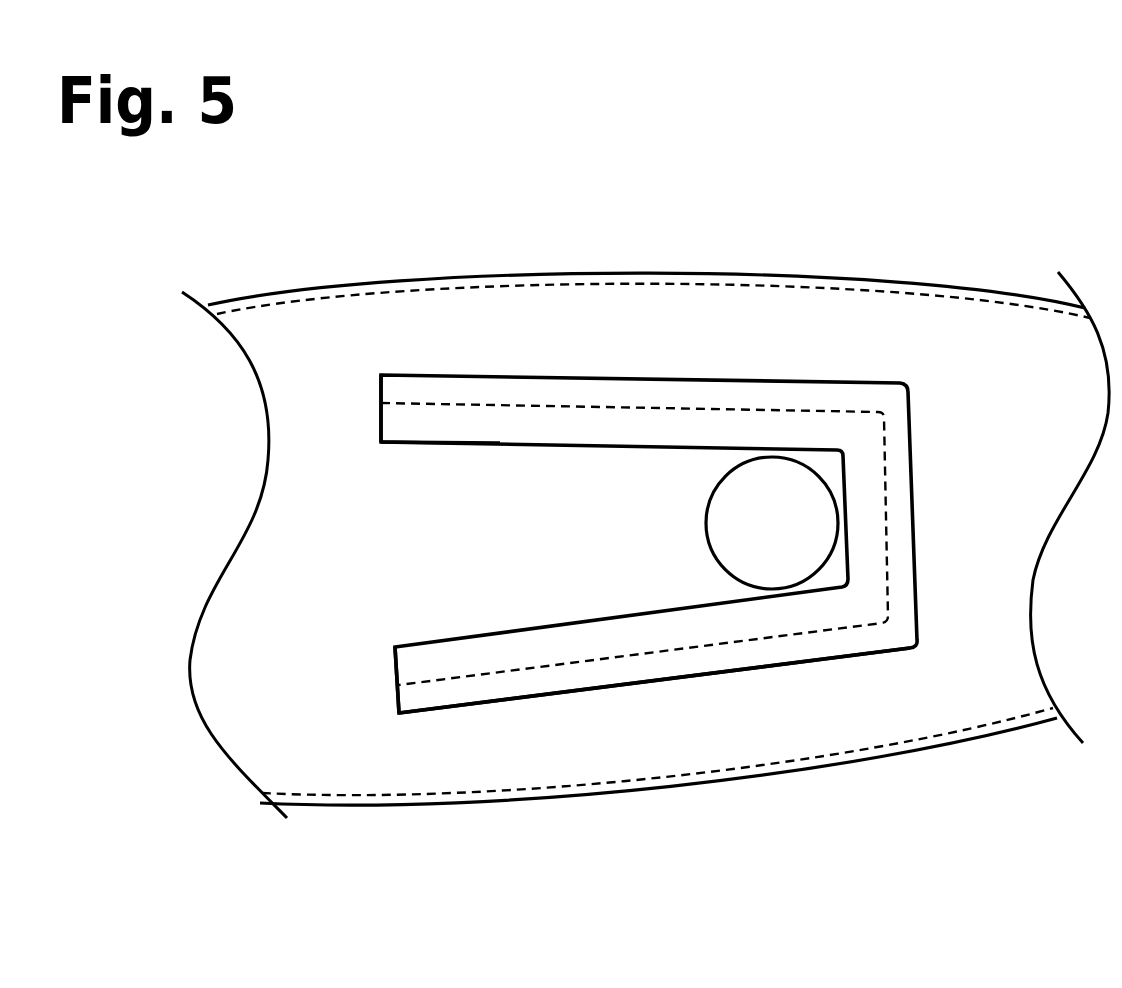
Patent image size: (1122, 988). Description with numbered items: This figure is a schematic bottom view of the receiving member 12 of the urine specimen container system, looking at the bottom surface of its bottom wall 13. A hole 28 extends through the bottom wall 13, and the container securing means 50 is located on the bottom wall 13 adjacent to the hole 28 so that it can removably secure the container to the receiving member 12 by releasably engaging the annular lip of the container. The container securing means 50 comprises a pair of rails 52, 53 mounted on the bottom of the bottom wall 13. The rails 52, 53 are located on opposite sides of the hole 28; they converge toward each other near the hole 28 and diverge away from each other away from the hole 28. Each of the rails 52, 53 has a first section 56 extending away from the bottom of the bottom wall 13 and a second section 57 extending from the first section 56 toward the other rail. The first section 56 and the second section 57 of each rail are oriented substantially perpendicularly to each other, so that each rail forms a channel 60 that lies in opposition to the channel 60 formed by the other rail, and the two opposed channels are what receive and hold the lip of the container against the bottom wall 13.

The receiving member 12 is at (272, 695).
The bottom wall 13 is at (427, 322).
The hole 28 is at (753, 458).
The container securing means 50 is at (859, 353).
The rail 52 is at (573, 393).
The rail 53 is at (503, 683).
The first section 56 is at (380, 383).
The second section 57 is at (380, 417).
The channel 60 is at (438, 660).